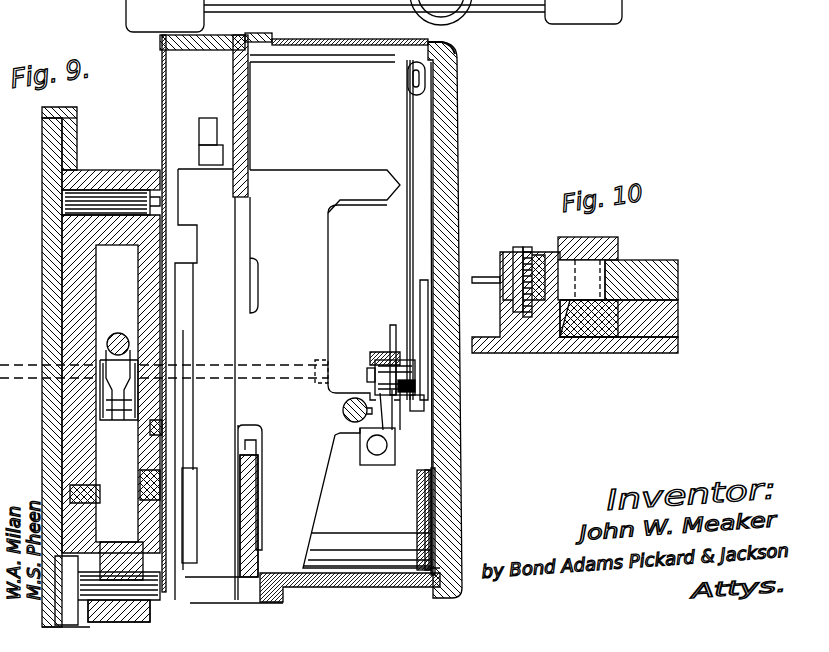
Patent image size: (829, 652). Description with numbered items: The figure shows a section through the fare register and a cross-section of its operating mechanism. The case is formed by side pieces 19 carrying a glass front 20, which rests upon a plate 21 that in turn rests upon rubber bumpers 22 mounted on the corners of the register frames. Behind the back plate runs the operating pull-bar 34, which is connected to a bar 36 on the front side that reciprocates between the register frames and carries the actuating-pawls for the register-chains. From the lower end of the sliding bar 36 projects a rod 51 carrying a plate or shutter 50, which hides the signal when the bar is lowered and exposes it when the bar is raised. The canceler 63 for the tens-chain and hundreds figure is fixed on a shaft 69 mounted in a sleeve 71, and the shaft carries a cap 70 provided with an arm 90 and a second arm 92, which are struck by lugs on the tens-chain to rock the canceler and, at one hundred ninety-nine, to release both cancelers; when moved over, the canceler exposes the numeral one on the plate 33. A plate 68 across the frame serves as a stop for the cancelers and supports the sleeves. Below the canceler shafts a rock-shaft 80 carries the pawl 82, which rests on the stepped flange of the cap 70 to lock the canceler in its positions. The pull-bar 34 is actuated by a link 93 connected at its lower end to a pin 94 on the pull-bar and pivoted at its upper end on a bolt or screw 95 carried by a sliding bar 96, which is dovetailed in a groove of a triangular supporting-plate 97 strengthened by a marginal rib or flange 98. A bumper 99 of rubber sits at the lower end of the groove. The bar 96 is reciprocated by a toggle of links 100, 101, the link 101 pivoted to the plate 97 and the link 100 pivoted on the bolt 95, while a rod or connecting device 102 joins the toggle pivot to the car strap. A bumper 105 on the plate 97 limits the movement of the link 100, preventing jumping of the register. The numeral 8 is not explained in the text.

In FIG. 9, the thin side wall 8 is at (160, 110).
In FIG. 9, the side pieces 19 is at (355, 42).
In FIG. 9, the glass front 20 is at (456, 157).
In FIG. 9, the plate 21 is at (430, 128).
In FIG. 9, the rubber bumpers 22 is at (418, 78).
In FIG. 9, the plate 33 is at (410, 312).
In FIG. 9, the operating pull-bar 34 is at (185, 448).
In FIG. 9, the bar 36 is at (333, 302).
In FIG. 9, the plate or shutter 50 is at (438, 482).
In FIG. 9, the rod 51 is at (330, 555).
In FIG. 9, the canceler 63 is at (420, 295).
In FIG. 9, the plate 68 is at (424, 402).
In FIG. 9, the shaft 69 is at (368, 374).
In FIG. 9, the cap 70 is at (372, 355).
In FIG. 9, the sleeve 71 is at (418, 386).
In FIG. 9, the rock-shaft 80 is at (372, 448).
In FIG. 9, the pawl 82 is at (386, 423).
In FIG. 9, the arm 90 is at (392, 332).
In FIG. 9, the second arm 92 is at (396, 404).
In FIG. 9, the link 93 is at (148, 292).
In FIG. 10, the link 93 is at (618, 246).
In FIG. 9, the pin 94 is at (152, 435).
In FIG. 9, the bolt or screw 95 is at (112, 183).
In FIG. 10, the bolt or screw 95 is at (595, 283).
In FIG. 9, the sliding bar 96 is at (72, 338).
In FIG. 10, the sliding bar 96 is at (592, 340).
In FIG. 9, the supporting-plate 97 is at (46, 290).
In FIG. 10, the supporting-plate 97 is at (548, 345).
In FIG. 9, the marginal rib or flange 98 is at (70, 125).
In FIG. 9, the bumper 99 is at (424, 483).
In FIG. 9, the link 100 is at (117, 393).
In FIG. 10, the link 100 is at (678, 275).
In FIG. 9, the link 101 is at (115, 548).
In FIG. 9, the rod or connecting device 102 is at (118, 333).
In FIG. 10, the bumper 105 is at (542, 258).